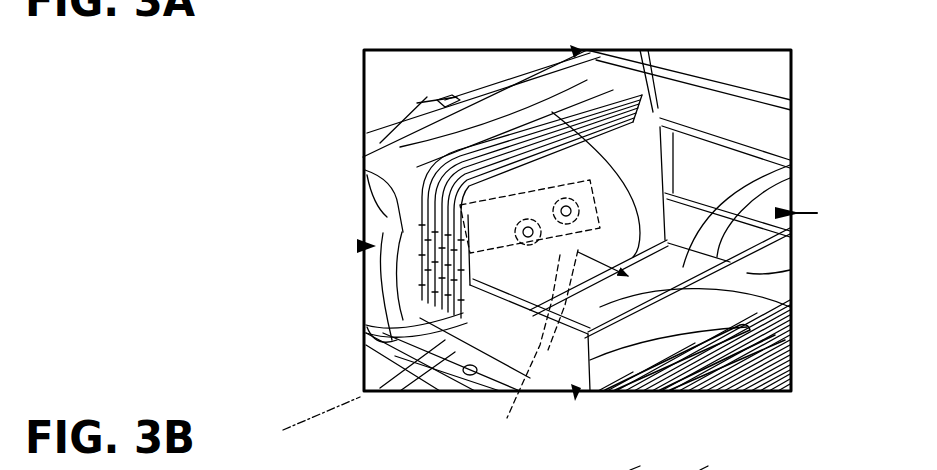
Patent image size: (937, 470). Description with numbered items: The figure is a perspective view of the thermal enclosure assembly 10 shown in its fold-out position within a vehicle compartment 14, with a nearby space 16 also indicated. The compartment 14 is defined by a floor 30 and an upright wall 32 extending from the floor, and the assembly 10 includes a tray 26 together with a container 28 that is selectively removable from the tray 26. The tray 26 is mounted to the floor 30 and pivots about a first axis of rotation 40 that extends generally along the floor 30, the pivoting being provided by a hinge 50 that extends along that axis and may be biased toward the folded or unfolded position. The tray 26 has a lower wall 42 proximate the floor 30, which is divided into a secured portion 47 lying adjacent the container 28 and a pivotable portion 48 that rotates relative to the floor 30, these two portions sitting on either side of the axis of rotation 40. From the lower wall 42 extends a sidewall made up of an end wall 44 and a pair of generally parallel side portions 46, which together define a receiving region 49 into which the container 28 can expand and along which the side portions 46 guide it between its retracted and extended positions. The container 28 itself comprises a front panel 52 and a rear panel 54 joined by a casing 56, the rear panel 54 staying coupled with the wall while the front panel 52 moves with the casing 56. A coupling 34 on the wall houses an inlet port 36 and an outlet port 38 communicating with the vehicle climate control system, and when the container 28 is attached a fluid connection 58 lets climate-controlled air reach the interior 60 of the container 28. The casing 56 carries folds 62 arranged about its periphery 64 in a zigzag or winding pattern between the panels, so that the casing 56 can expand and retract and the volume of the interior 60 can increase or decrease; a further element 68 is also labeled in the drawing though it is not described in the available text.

The thermal enclosure assembly 10 is at (774, 82).
The compartment 14 is at (452, 85).
The space 16 is at (694, 345).
The tray 26 is at (791, 252).
The container 28 is at (690, 205).
The floor 30 is at (468, 373).
The upright wall 32 is at (768, 138).
The coupling 34 is at (440, 290).
The inlet port 36 is at (490, 254).
The outlet port 38 is at (460, 208).
The first axis of rotation 40 is at (300, 421).
The lower wall 42 is at (790, 178).
The end wall 44 is at (790, 270).
The side portions 46 is at (705, 160).
The secured portion 47 is at (400, 360).
The pivotable portion 48 is at (790, 165).
The receiving region 49 is at (790, 307).
The hinge 50 is at (410, 115).
The front panel 52 is at (663, 111).
The rear panel 54 is at (552, 112).
The casing 56 is at (420, 112).
The fluid connection 58 is at (507, 327).
The interior 60 is at (642, 469).
The folds 62 is at (622, 95).
The periphery 64 is at (363, 157).
The actuator 68 is at (708, 469).